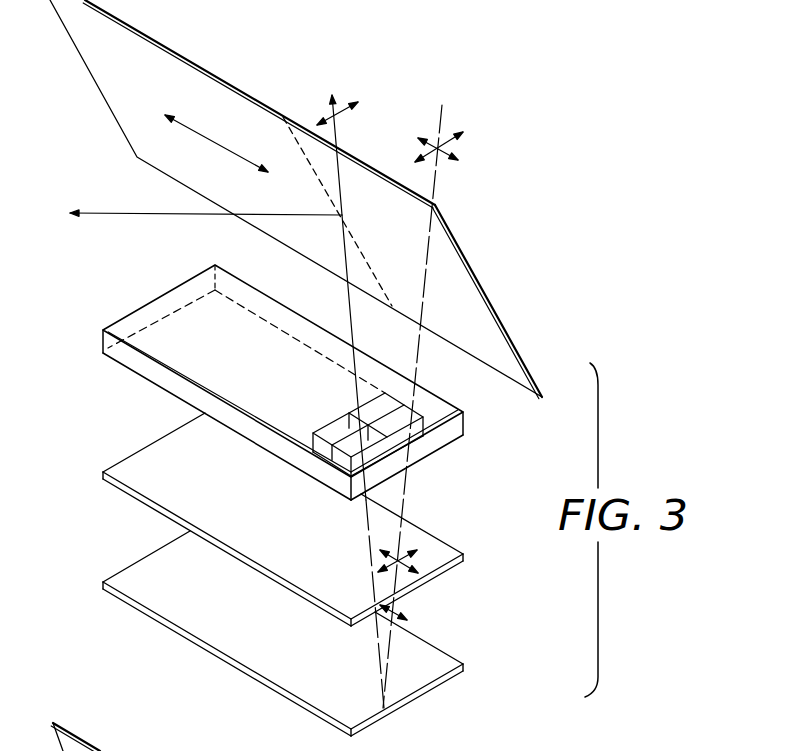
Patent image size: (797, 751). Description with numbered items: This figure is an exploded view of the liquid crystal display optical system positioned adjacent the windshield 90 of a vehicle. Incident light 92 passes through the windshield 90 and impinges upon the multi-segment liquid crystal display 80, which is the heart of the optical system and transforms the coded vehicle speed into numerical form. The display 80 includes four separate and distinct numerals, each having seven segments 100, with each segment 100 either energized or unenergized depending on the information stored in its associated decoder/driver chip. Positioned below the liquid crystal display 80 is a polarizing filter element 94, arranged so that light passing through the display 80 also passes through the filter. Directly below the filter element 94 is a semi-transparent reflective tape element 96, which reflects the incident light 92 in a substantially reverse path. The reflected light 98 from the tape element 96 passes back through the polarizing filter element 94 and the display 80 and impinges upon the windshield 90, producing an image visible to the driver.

The multi-segment liquid crystal display 80 is at (152, 310).
The windshield 90 is at (465, 277).
The incident light 92 is at (435, 183).
The polarizing filter element 94 is at (142, 455).
The semi-transparent reflective tape element 96 is at (133, 570).
The reflected light 98 is at (349, 300).
The segment 100 is at (430, 410).